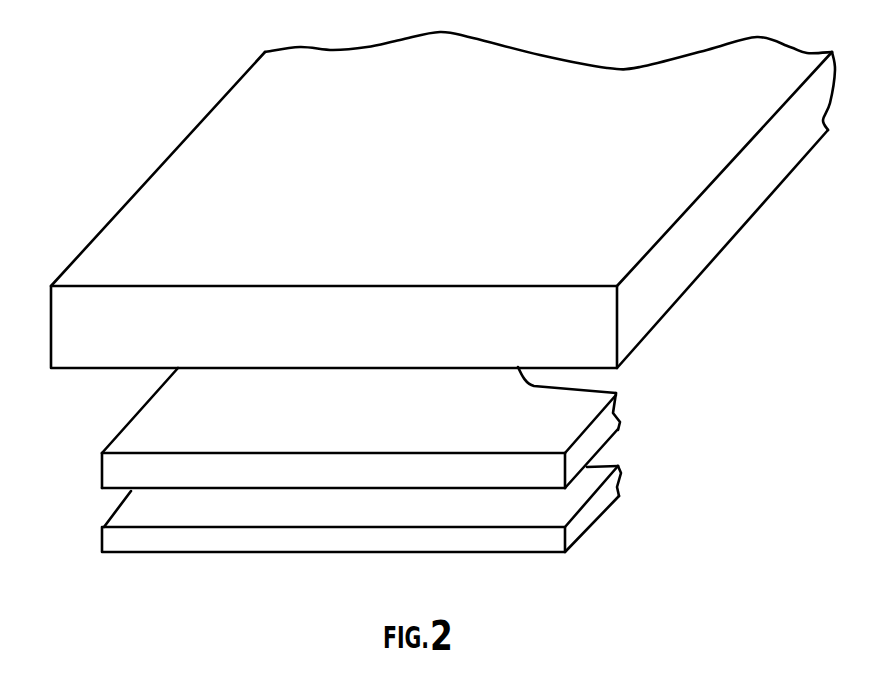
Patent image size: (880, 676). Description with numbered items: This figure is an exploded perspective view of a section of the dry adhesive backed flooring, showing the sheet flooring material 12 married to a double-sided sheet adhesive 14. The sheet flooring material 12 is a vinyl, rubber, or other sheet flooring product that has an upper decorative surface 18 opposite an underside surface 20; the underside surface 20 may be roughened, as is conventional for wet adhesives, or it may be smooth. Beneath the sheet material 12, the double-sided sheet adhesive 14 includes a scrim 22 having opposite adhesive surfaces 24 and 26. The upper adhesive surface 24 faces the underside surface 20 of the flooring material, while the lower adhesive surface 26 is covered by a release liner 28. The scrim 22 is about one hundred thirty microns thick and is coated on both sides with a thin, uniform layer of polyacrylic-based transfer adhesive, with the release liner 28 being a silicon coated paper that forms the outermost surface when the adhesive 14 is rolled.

The sheet flooring material 12 is at (443, 200).
The double-sided sheet adhesive 14 is at (670, 450).
The upper decorative surface 18 is at (478, 150).
The underside surface 20 is at (590, 369).
The scrim 22 is at (321, 428).
The adhesive surface 24 is at (381, 420).
The lower adhesive surface 26 is at (366, 509).
The release liner 28 is at (573, 528).